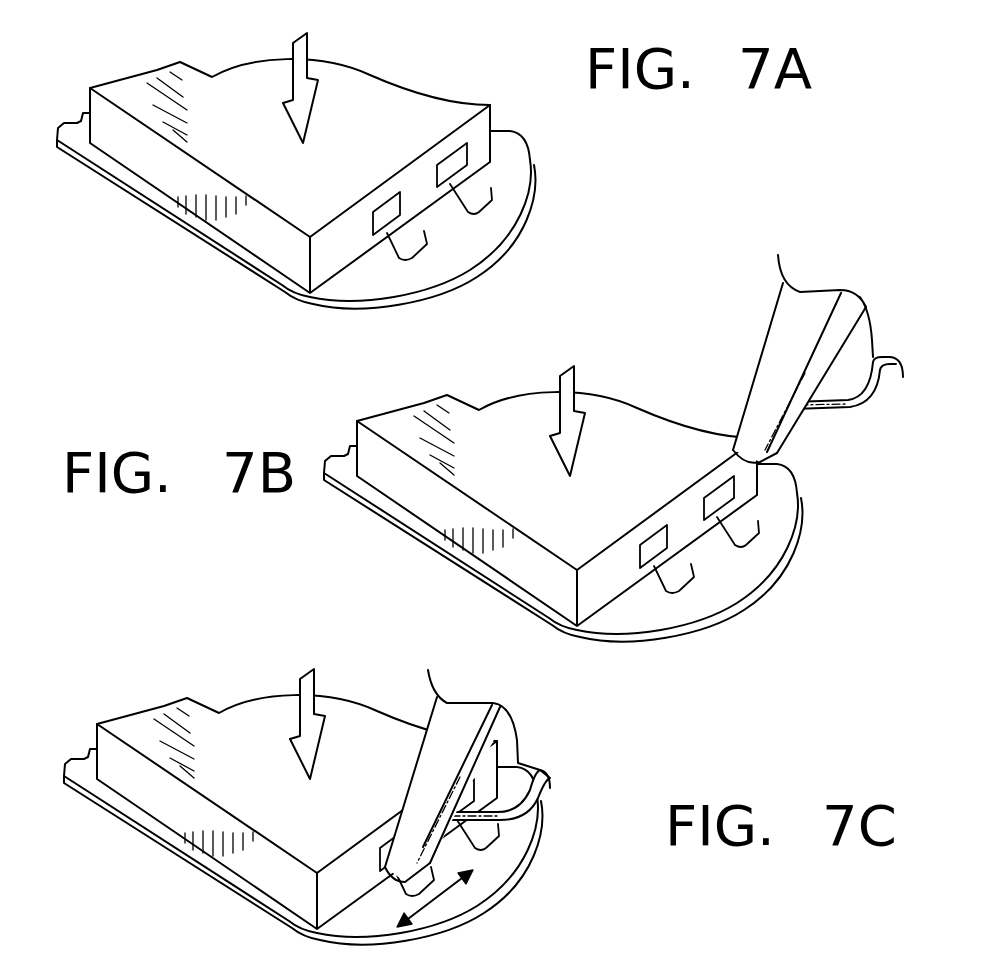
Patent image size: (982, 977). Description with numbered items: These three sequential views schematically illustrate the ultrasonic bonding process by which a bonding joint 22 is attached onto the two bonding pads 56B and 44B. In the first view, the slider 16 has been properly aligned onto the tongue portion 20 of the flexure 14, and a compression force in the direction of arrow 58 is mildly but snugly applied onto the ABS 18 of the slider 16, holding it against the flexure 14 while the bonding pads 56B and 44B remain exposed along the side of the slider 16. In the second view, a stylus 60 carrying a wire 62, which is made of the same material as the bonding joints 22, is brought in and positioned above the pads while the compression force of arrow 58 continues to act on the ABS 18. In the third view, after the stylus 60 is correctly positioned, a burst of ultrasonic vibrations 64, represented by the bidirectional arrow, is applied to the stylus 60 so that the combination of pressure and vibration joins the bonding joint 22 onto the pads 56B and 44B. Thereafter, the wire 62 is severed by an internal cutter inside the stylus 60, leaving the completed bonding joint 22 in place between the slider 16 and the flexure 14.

In FIG. 7A, the flexure 14 is at (343, 325).
In FIG. 7B, the flexure 14 is at (561, 580).
In FIG. 7C, the flexure 14 is at (301, 844).
In FIG. 7A, the slider 16 is at (258, 132).
In FIG. 7B, the slider 16 is at (557, 515).
In FIG. 7C, the slider 16 is at (297, 818).
In FIG. 7A, the ABS 18 is at (370, 110).
In FIG. 7B, the ABS 18 is at (557, 409).
In FIG. 7C, the ABS 18 is at (297, 686).
In FIG. 7A, the tongue portion 20 is at (503, 250).
In FIG. 7B, the tongue portion 20 is at (591, 557).
In FIG. 7C, the tongue portion 20 is at (342, 860).
In FIG. 7C, the bonding joint 22 is at (525, 795).
In FIG. 7A, the bonding pad 44B is at (418, 244).
In FIG. 7B, the bonding pad 44B is at (693, 575).
In FIG. 7C, the bonding pad 44B is at (404, 898).
In FIG. 7A, the bonding pad 56B is at (373, 213).
In FIG. 7B, the bonding pad 56B is at (657, 522).
In FIG. 7C, the bonding pad 56B is at (397, 825).
In FIG. 7A, the arrow 58 is at (300, 38).
In FIG. 7B, the arrow 58 is at (546, 412).
In FIG. 7C, the arrow 58 is at (286, 714).
In FIG. 7B, the stylus 60 is at (788, 359).
In FIG. 7C, the stylus 60 is at (467, 776).
In FIG. 7B, the wire 62 is at (848, 412).
In FIG. 7C, the ultrasonic vibrations 64 is at (458, 913).